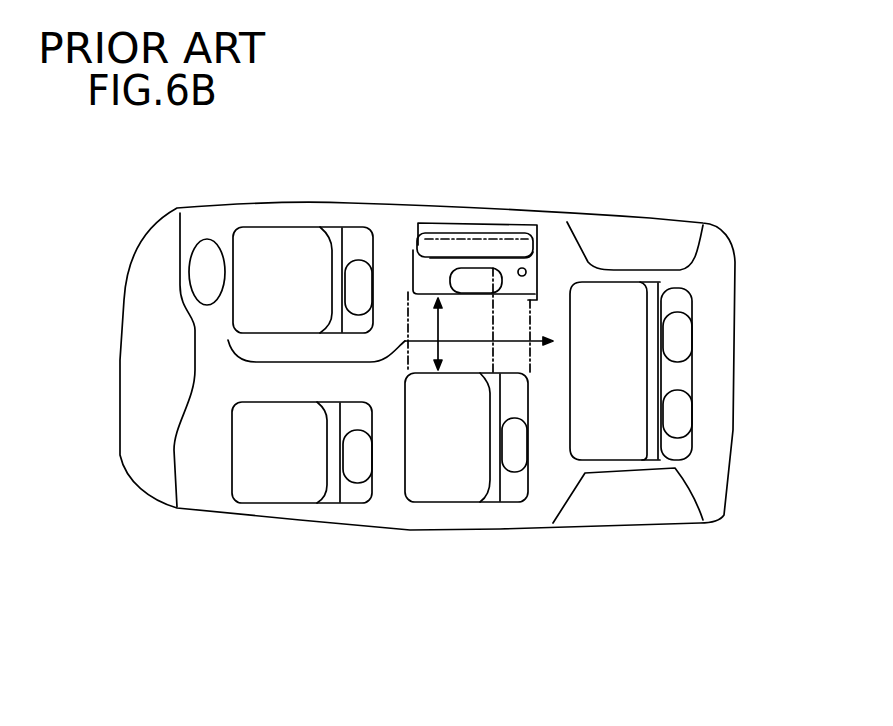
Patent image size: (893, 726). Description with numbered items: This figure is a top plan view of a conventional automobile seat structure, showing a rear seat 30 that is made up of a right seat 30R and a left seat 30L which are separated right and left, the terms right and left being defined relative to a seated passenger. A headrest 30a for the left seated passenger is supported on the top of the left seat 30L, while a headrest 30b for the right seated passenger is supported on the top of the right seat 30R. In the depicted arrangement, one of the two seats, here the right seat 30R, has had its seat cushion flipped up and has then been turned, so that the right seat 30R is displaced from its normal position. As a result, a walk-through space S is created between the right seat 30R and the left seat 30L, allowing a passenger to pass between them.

The walk-through space S is at (433, 337).
The rear seat 30 is at (550, 250).
The left seat 30L is at (443, 472).
The right seat 30R is at (504, 232).
The headrest 30a is at (517, 450).
The headrest 30b is at (500, 288).